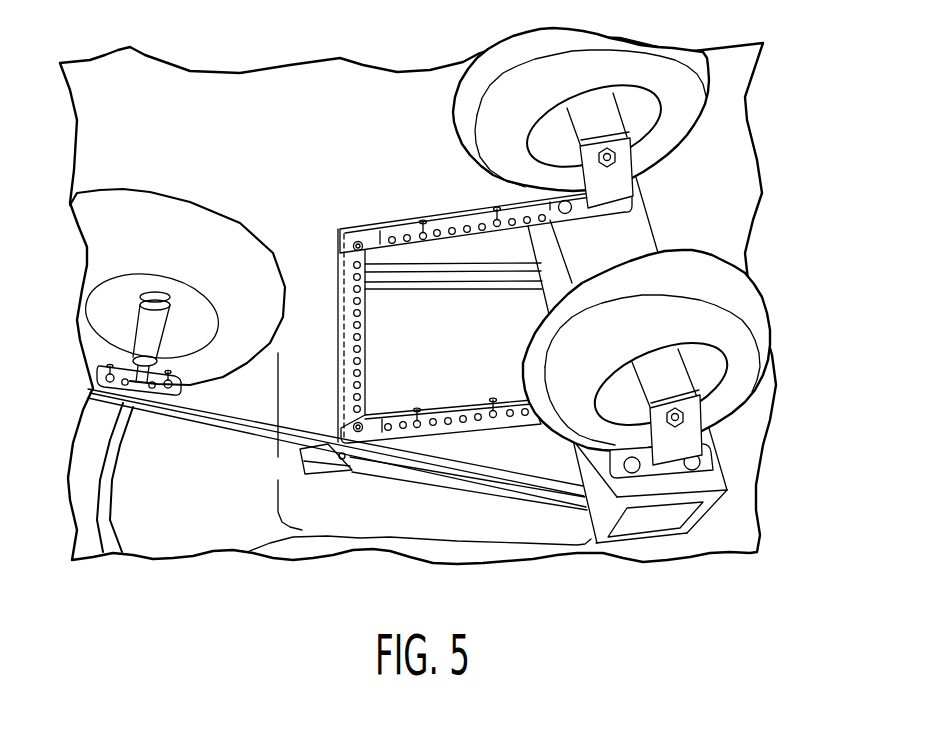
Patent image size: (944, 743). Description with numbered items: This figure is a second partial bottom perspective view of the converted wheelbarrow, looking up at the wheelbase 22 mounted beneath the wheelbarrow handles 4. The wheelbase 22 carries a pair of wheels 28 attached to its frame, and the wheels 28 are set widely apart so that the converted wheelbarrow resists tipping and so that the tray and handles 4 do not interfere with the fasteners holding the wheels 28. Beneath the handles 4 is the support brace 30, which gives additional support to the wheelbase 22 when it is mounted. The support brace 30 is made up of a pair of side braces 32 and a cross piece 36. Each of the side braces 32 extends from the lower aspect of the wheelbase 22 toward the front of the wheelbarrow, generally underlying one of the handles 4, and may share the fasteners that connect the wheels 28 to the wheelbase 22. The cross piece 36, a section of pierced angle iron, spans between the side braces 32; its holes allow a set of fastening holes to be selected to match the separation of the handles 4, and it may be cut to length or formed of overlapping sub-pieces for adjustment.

The handles 4 is at (311, 467).
The wheelbase 22 is at (674, 355).
The wheels 28 is at (640, 253).
The support brace 30 is at (373, 294).
The side braces 32 is at (486, 320).
The cross piece 36 is at (273, 485).